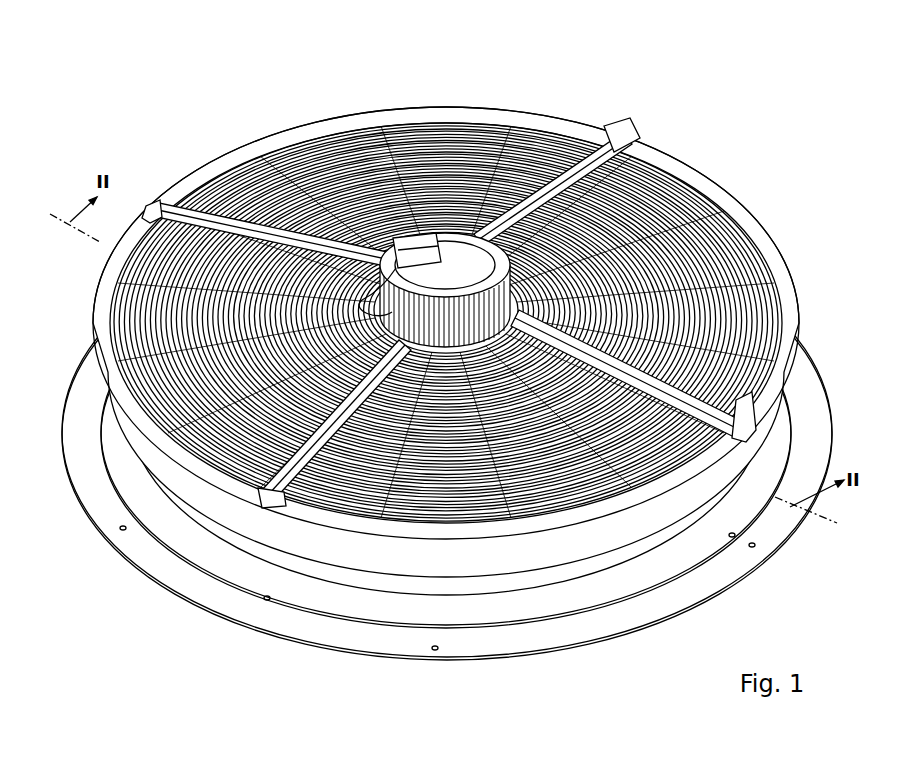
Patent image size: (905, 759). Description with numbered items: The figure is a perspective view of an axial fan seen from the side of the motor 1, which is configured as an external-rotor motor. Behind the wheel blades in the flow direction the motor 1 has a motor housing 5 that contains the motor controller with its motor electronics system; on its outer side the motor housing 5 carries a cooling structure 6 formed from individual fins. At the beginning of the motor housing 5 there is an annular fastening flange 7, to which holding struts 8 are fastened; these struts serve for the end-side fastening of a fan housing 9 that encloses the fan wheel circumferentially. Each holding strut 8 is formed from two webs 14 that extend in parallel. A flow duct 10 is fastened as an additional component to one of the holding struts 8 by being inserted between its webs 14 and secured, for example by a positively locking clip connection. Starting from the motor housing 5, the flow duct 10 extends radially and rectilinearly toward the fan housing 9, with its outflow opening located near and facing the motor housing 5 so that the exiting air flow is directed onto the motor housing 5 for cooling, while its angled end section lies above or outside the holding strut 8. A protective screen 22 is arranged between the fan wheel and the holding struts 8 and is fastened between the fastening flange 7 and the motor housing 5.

The motor 1 is at (690, 186).
The motor housing 5 is at (288, 395).
The cooling structure 6 is at (440, 112).
The fastening flange 7 is at (368, 520).
The holding struts 8 is at (200, 215).
The fan housing 9 is at (567, 598).
The flow duct 10 is at (745, 250).
The webs 14 is at (590, 128).
The protective screen 22 is at (333, 126).